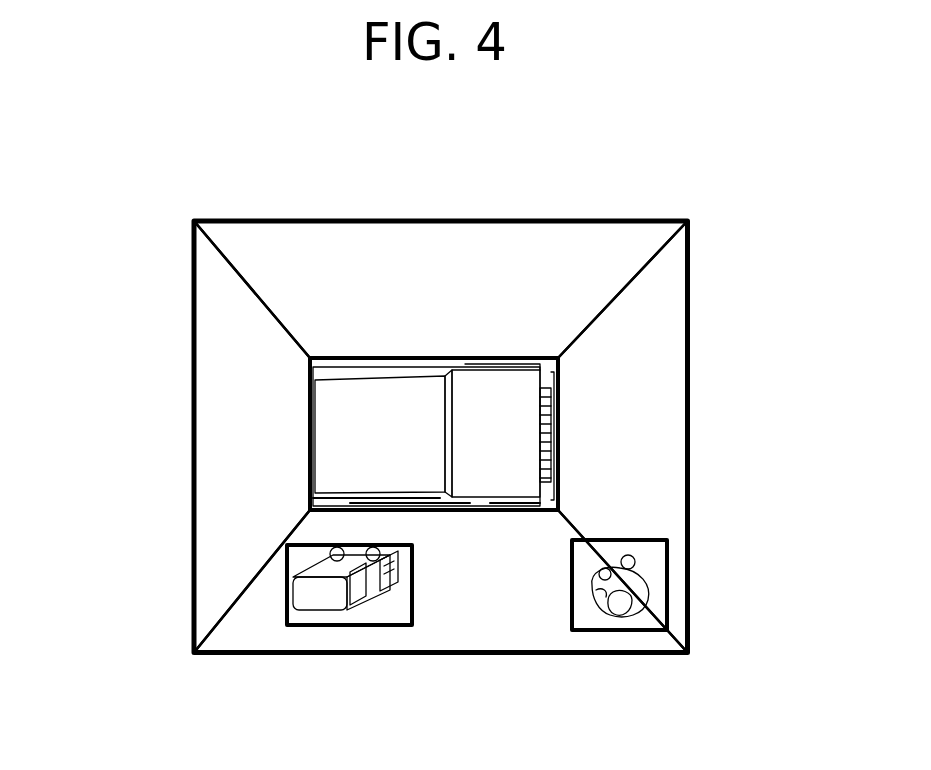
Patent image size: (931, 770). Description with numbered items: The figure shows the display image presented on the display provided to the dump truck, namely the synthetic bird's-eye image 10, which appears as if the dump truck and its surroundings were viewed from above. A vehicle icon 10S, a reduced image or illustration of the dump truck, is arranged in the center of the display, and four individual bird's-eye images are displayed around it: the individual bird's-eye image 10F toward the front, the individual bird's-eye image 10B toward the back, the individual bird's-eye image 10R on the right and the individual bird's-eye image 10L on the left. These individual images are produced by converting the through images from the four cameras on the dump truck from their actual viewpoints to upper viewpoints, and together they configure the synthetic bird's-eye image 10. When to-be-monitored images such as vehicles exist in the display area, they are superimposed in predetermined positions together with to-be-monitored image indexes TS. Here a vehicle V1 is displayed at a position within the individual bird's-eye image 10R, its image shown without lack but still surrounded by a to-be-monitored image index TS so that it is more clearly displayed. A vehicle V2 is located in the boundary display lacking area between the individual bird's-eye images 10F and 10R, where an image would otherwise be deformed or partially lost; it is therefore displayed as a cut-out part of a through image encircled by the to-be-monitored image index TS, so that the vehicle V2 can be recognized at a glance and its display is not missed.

The synthetic bird's-eye image 10 is at (631, 214).
The individual bird's-eye image 10L is at (492, 242).
The individual bird's-eye image 10F is at (659, 432).
The individual bird's-eye image 10B is at (213, 523).
The individual bird's-eye image 10R is at (458, 608).
The vehicle icon 10S is at (371, 396).
The to-be-monitored image index TS is at (314, 628).
The vehicle V1 is at (356, 612).
The vehicle V2 is at (643, 590).